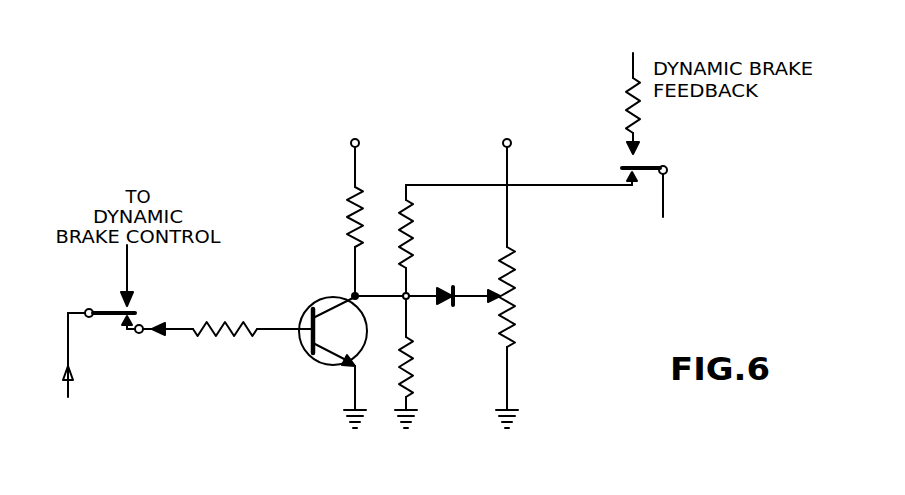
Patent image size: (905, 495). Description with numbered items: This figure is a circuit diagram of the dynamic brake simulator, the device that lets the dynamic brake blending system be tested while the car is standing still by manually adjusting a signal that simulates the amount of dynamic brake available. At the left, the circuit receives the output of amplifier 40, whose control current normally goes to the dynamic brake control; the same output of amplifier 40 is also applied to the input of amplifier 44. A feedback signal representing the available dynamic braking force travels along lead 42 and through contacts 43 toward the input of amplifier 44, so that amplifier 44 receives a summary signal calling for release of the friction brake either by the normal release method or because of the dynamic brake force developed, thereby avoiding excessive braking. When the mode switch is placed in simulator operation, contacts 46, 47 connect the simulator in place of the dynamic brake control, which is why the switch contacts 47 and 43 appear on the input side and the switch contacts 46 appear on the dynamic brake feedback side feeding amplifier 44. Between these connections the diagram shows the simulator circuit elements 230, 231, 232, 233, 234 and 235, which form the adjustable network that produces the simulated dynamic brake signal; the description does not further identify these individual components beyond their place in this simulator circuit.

The amplifier 40 is at (92, 388).
The lead 42 is at (134, 280).
The contacts 43 is at (143, 312).
The amplifier 44 is at (681, 225).
The contacts 46 is at (643, 171).
The contacts 47 is at (108, 308).
The transistor 230 is at (322, 366).
The collector resistor 231 is at (362, 201).
The diode 232 is at (438, 305).
The potentiometer wiper 233 is at (497, 288).
The potentiometer 234 is at (518, 286).
The resistor 235 is at (416, 350).